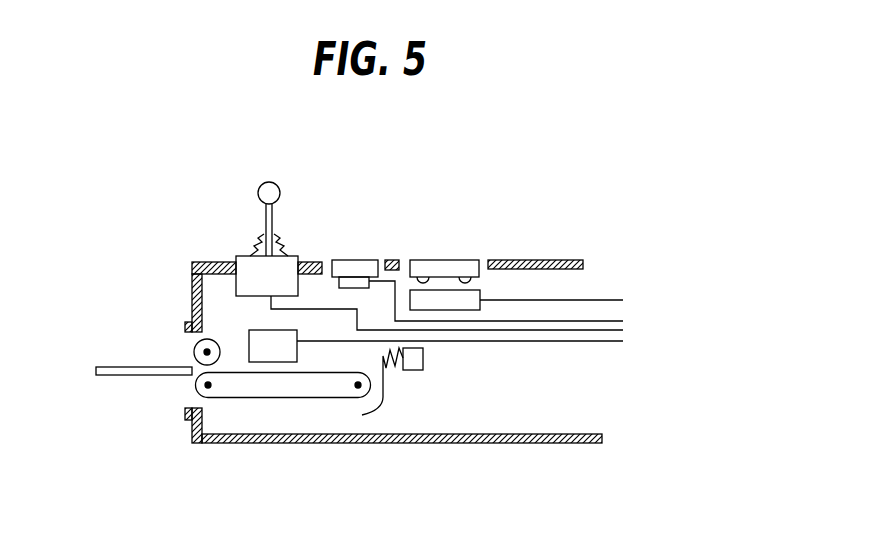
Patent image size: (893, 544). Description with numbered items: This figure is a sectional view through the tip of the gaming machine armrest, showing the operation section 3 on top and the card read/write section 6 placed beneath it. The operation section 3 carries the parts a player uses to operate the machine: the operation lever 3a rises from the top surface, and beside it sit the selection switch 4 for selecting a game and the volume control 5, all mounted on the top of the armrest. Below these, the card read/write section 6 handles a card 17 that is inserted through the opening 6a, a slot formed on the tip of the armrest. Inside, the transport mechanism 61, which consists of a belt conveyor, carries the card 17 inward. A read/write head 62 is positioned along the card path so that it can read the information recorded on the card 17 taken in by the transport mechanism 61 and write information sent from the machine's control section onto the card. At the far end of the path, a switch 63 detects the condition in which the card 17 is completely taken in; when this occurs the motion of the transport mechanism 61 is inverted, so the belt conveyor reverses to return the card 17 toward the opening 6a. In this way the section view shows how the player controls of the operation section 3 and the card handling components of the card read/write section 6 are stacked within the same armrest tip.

The operation section 3 is at (470, 173).
The operation lever 3a is at (273, 220).
The selection switch 4 is at (352, 258).
The volume control 5 is at (438, 258).
The card read/write section 6 is at (332, 407).
The opening 6a is at (188, 348).
The card 17 is at (138, 367).
The transport mechanism 61 is at (238, 418).
The read/write head 62 is at (258, 332).
The switch 63 is at (397, 386).